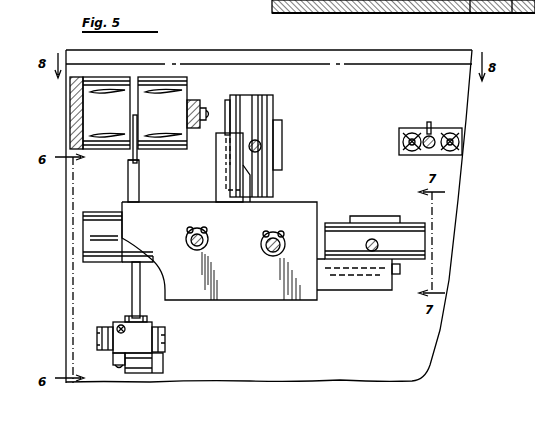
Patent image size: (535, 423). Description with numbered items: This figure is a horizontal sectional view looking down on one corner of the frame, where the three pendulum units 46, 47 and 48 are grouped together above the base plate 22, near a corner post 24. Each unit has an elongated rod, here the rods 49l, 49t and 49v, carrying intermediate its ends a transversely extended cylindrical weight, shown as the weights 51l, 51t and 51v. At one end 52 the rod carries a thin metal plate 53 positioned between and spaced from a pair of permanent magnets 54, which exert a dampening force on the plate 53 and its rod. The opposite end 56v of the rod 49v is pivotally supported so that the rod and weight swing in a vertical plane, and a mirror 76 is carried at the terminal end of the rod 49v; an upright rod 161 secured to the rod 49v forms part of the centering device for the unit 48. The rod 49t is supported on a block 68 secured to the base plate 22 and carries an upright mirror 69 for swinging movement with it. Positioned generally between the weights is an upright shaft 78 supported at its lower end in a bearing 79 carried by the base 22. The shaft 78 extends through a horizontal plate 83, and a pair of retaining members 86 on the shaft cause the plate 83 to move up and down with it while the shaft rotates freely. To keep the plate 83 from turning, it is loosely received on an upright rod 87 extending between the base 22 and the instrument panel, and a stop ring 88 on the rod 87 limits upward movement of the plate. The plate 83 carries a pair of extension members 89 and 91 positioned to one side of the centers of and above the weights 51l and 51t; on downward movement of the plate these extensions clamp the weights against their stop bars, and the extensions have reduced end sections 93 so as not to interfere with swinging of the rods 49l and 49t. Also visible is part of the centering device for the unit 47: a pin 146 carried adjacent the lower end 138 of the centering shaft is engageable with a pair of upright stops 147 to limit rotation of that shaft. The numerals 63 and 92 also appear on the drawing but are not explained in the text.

The base plate 22 is at (383, 372).
The corner post 24 is at (70, 104).
The pendulum unit 46 is at (386, 199).
The pendulum unit 47 is at (301, 124).
The pendulum unit 48 is at (112, 290).
The rod 49v is at (140, 173).
The rod 49t is at (261, 146).
The rod 49l is at (378, 245).
The cylindrically shaped weight 51t is at (273, 105).
The cylindrically shaped weight 51v is at (100, 262).
The cylindrically shaped weight 51l is at (334, 222).
The rod end 52 is at (131, 160).
The thin metal plate 53 is at (138, 126).
The permanent magnets 54 is at (88, 114).
The rod end 56v is at (141, 304).
The stop 63 is at (398, 276).
The block 68 is at (470, 13).
The upright mirror 69 is at (227, 120).
The mirror 76 is at (140, 373).
The upright shaft 78 is at (264, 254).
The bearing 79 is at (512, 13).
The horizontal plate 83 is at (310, 303).
The retaining members 86 is at (274, 258).
The upright rod 87 is at (206, 232).
The stop ring 88 is at (208, 242).
The extension member 89 is at (345, 292).
The extension member 91 is at (221, 185).
The plate edge 92 is at (121, 207).
The reduced end sections 93 is at (222, 148).
The lower end 138 is at (426, 149).
The pin 146 is at (431, 122).
The upright stops 147 is at (410, 128).
The upright rod 161 is at (125, 330).